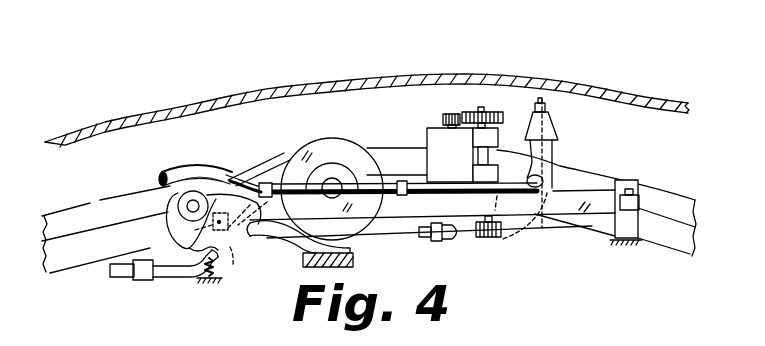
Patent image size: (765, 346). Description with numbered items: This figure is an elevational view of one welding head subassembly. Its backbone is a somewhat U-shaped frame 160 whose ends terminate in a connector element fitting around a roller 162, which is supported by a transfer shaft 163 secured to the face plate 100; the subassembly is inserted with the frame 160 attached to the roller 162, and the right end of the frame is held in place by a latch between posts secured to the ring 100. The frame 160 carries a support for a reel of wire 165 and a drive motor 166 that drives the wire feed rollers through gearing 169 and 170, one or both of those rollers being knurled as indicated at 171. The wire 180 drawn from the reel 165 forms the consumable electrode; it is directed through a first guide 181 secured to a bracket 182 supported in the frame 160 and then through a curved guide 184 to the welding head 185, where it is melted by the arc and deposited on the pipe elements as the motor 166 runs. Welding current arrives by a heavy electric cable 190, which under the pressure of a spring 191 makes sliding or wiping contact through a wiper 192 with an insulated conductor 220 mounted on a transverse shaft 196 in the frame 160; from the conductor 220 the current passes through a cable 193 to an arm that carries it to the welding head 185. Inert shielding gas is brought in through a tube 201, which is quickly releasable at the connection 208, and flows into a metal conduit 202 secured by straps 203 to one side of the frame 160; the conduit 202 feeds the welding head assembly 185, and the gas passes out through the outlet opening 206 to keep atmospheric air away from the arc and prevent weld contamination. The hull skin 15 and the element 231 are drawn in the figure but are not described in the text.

The hull skin 15 is at (524, 77).
The face plate 100 is at (677, 255).
The U-shaped frame 160 is at (563, 212).
The roller 162 is at (177, 197).
The transfer shaft 163 is at (172, 220).
The reel of wire 165 is at (329, 145).
The drive motor 166 is at (430, 137).
The gearing 169 is at (447, 115).
The gearing 170 is at (510, 105).
The knurling 171 is at (489, 239).
The wire 180 is at (546, 106).
The first guide 181 is at (448, 241).
The bracket 182 is at (435, 241).
The curved guide 184 is at (553, 172).
The welding head 185 is at (556, 131).
The electric cable 190 is at (121, 283).
The spring 191 is at (218, 266).
The wiper 192 is at (172, 282).
The cable 193 is at (446, 198).
The transverse shaft 196 is at (188, 246).
The tube 201 is at (186, 167).
The metal conduit 202 is at (272, 166).
The straps 203 is at (270, 196).
The outlet opening 206 is at (556, 124).
The connection 208 is at (237, 168).
The insulated conductor 220 is at (229, 253).
The shoe 231 is at (275, 242).